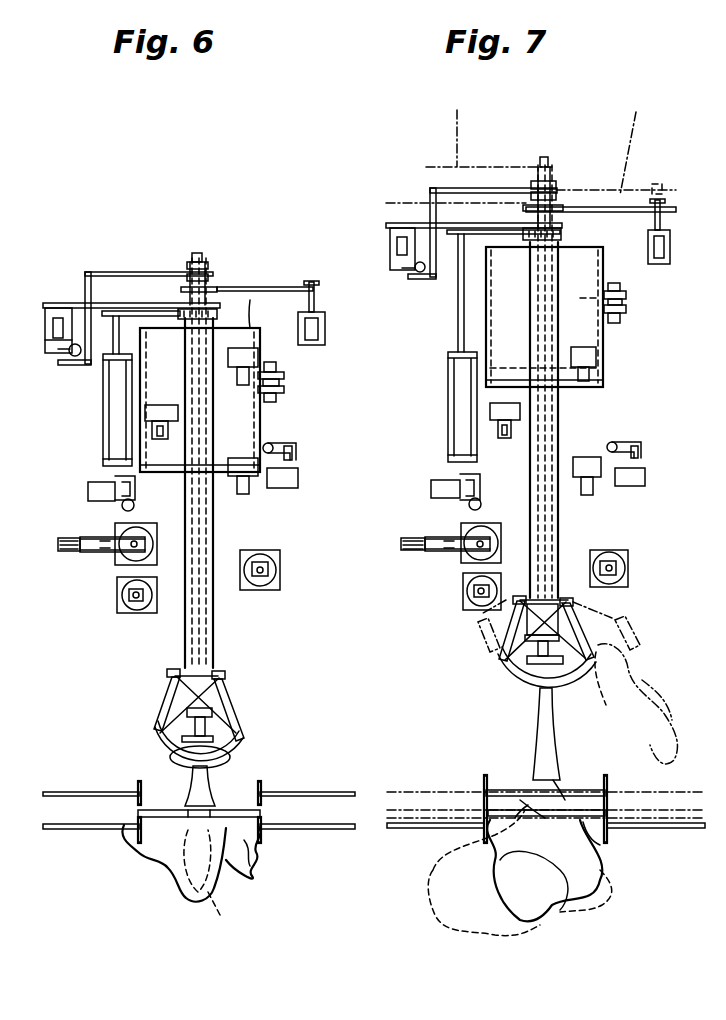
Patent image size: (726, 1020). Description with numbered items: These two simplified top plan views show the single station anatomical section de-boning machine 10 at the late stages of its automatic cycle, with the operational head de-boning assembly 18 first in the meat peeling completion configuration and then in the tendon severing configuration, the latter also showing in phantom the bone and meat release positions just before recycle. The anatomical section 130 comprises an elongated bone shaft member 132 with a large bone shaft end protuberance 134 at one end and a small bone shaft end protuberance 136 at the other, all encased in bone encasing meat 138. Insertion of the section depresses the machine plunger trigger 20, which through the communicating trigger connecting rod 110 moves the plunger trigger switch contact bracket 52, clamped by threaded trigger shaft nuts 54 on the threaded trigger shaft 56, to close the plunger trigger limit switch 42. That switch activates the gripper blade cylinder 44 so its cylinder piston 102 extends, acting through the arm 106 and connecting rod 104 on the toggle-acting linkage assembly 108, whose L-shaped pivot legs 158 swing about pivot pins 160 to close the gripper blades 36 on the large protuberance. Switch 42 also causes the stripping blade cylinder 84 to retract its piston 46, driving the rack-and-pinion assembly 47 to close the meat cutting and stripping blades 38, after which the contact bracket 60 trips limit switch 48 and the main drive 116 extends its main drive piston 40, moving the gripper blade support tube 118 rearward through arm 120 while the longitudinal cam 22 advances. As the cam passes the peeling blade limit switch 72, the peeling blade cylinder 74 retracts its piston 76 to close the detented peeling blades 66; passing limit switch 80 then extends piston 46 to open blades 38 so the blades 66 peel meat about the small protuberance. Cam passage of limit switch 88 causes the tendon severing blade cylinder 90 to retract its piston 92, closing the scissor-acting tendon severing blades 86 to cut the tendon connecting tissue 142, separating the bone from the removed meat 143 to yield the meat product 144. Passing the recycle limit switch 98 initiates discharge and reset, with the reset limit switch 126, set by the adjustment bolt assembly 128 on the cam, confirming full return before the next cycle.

In FIG. 6, the single station anatomical section de-boning machine 10 is at (253, 156).
In FIG. 7, the single station anatomical section de-boning machine 10 is at (632, 110).
In FIG. 6, the operational head de-boning assembly 18 is at (103, 680).
In FIG. 7, the operational head de-boning assembly 18 is at (425, 678).
In FIG. 6, the machine plunger trigger 20 is at (214, 738).
In FIG. 7, the machine plunger trigger 20 is at (568, 655).
In FIG. 6, the longitudinal cam 22 is at (258, 424).
In FIG. 7, the longitudinal cam 22 is at (604, 334).
In FIG. 6, the cooperative toggle-acting anatomical section gripper blades 36 is at (172, 752).
In FIG. 7, the cooperative toggle-acting anatomical section gripper blades 36 is at (480, 630).
In FIG. 6, the shaped cooperative meat cutting and stripping blades 38 is at (96, 830).
In FIG. 7, the shaped cooperative meat cutting and stripping blades 38 is at (425, 830).
In FIG. 6, the main drive piston 40 is at (114, 346).
In FIG. 7, the main drive piston 40 is at (457, 298).
In FIG. 6, the plunger trigger electrical solenoid air valve limit switch 42 is at (48, 322).
In FIG. 7, the plunger trigger electrical solenoid air valve limit switch 42 is at (388, 236).
In FIG. 6, the cooperative toggle-acting anatomical section gripper blade cylinder 44 is at (326, 330).
In FIG. 7, the cooperative toggle-acting anatomical section gripper blade cylinder 44 is at (670, 242).
In FIG. 6, the cylinder piston 46 is at (118, 553).
In FIG. 7, the cylinder piston 46 is at (464, 553).
In FIG. 6, the rack-and-pinion assembly 47 is at (96, 519).
In FIG. 7, the rack-and-pinion assembly 47 is at (440, 521).
In FIG. 6, the compound multiple-acting pneumatic cylinder main drive piston electrical solenoi 48 is at (80, 538).
In FIG. 7, the compound multiple-acting pneumatic cylinder main drive piston electrical solenoi 48 is at (414, 551).
In FIG. 6, the plunger trigger switch contact bracket 52 is at (128, 270).
In FIG. 7, the plunger trigger switch contact bracket 52 is at (457, 135).
In FIG. 6, the threaded trigger shaft nuts 54 is at (208, 263).
In FIG. 7, the threaded trigger shaft nuts 54 is at (556, 181).
In FIG. 6, the threaded trigger shaft 56 is at (196, 254).
In FIG. 7, the threaded trigger shaft 56 is at (543, 156).
In FIG. 6, the contact bracket 60 is at (105, 549).
In FIG. 7, the contact bracket 60 is at (448, 538).
In FIG. 6, the detented peeling blades 66 is at (149, 868).
In FIG. 7, the detented peeling blades 66 is at (435, 830).
In FIG. 6, the detented peeling blade electrical solenoid air valve limit switch 72 is at (96, 482).
In FIG. 7, the detented peeling blade electrical solenoid air valve limit switch 72 is at (438, 480).
In FIG. 6, the detented peeling blade cylinder 74 is at (278, 560).
In FIG. 7, the detented peeling blade cylinder 74 is at (628, 560).
In FIG. 6, the piston 76 is at (265, 569).
In FIG. 7, the piston 76 is at (616, 567).
In FIG. 6, the shaped cooperative meat cutting and stripping blade electrical solenoid air valv 80 is at (238, 486).
In FIG. 7, the shaped cooperative meat cutting and stripping blade electrical solenoid air valv 80 is at (593, 486).
In FIG. 6, the shaped cooperative meat cutting and stripping blade cylinder 84 is at (136, 528).
In FIG. 7, the shaped cooperative meat cutting and stripping blade cylinder 84 is at (505, 535).
In FIG. 6, the scissor-acting tendon severing blades 86 is at (76, 792).
In FIG. 7, the scissor-acting tendon severing blades 86 is at (410, 791).
In FIG. 6, the tendon severing blade electrical solenoid air valve limit switch 88 is at (176, 405).
In FIG. 7, the tendon severing blade electrical solenoid air valve limit switch 88 is at (513, 438).
In FIG. 6, the tendon severing blade cylinder 90 is at (128, 607).
In FIG. 7, the tendon severing blade cylinder 90 is at (470, 591).
In FIG. 6, the piston 92 is at (130, 595).
In FIG. 7, the piston 92 is at (476, 600).
In FIG. 6, the machine recycle electrical solenoid air valve limit switch 98 is at (251, 300).
In FIG. 7, the machine recycle electrical solenoid air valve limit switch 98 is at (617, 364).
In FIG. 6, the cylinder piston 102 is at (315, 295).
In FIG. 7, the cylinder piston 102 is at (657, 184).
In FIG. 6, the connecting rod 104 is at (183, 302).
In FIG. 7, the connecting rod 104 is at (525, 228).
In FIG. 6, the arm 106 is at (262, 287).
In FIG. 7, the arm 106 is at (632, 160).
In FIG. 6, the toggle-acting linkage assembly 108 is at (246, 664).
In FIG. 7, the toggle-acting linkage assembly 108 is at (608, 653).
In FIG. 6, the communicating trigger connecting rod 110 is at (217, 300).
In FIG. 7, the communicating trigger connecting rod 110 is at (562, 216).
In FIG. 6, the compound multiple-acting pneumatic cylinder main drive 116 is at (110, 405).
In FIG. 7, the compound multiple-acting pneumatic cylinder main drive 116 is at (455, 382).
In FIG. 6, the gripper blade support tube 118 is at (214, 608).
In FIG. 7, the gripper blade support tube 118 is at (558, 523).
In FIG. 6, the arm 120 is at (128, 310).
In FIG. 7, the arm 120 is at (468, 234).
In FIG. 6, the reset limit switch 126 is at (298, 456).
In FIG. 7, the reset limit switch 126 is at (644, 454).
In FIG. 6, the reset limit switch adjustment bolt assembly 128 is at (293, 375).
In FIG. 7, the reset limit switch adjustment bolt assembly 128 is at (645, 296).
In FIG. 6, the anatomical section 130 is at (134, 912).
In FIG. 6, the elongated bone shaft member 132 is at (170, 867).
In FIG. 7, the elongated bone shaft member 132 is at (535, 716).
In FIG. 6, the large bone shaft end protuberance 134 is at (230, 764).
In FIG. 7, the large bone shaft end protuberance 134 is at (520, 688).
In FIG. 6, the small bone shaft end protuberance 136 is at (226, 914).
In FIG. 7, the small bone shaft end protuberance 136 is at (525, 773).
In FIG. 6, the bone encasing meat 138 is at (278, 876).
In FIG. 7, the meat-to-bone tendon connecting tissue 142 is at (562, 768).
In FIG. 7, the removed anatomical section meat 143 is at (594, 840).
In FIG. 7, the anatomical section meat product 144 is at (430, 916).
In FIG. 6, the L-shaped gripper blade supporting pivot legs 158 is at (170, 700).
In FIG. 7, the L-shaped gripper blade supporting pivot legs 158 is at (600, 600).
In FIG. 6, the linear to pivotal motion translation pivot pins 160 is at (186, 668).
In FIG. 7, the linear to pivotal motion translation pivot pins 160 is at (572, 596).